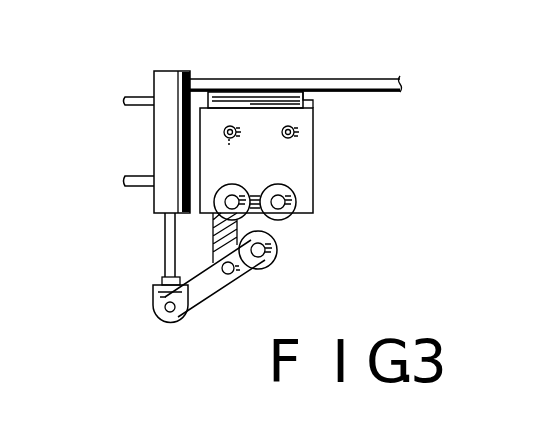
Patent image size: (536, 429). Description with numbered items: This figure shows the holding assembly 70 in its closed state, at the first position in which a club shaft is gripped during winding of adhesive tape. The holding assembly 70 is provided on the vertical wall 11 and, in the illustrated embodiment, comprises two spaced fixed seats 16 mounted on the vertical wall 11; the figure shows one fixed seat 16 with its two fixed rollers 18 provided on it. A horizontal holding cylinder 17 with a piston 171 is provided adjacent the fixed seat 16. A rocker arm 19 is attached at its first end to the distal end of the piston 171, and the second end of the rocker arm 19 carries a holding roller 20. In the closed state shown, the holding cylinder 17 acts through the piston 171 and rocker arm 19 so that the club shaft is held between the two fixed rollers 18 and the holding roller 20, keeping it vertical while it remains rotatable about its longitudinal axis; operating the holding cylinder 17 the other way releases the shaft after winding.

The vertical wall 11 is at (340, 79).
The fixed seat 16 is at (297, 147).
The holding cylinder 17 is at (160, 140).
The fixed roller 18 is at (298, 198).
The rocker arm 19 is at (218, 278).
The holding roller 20 is at (278, 250).
The holding assembly 70 is at (140, 208).
The piston 171 is at (163, 247).